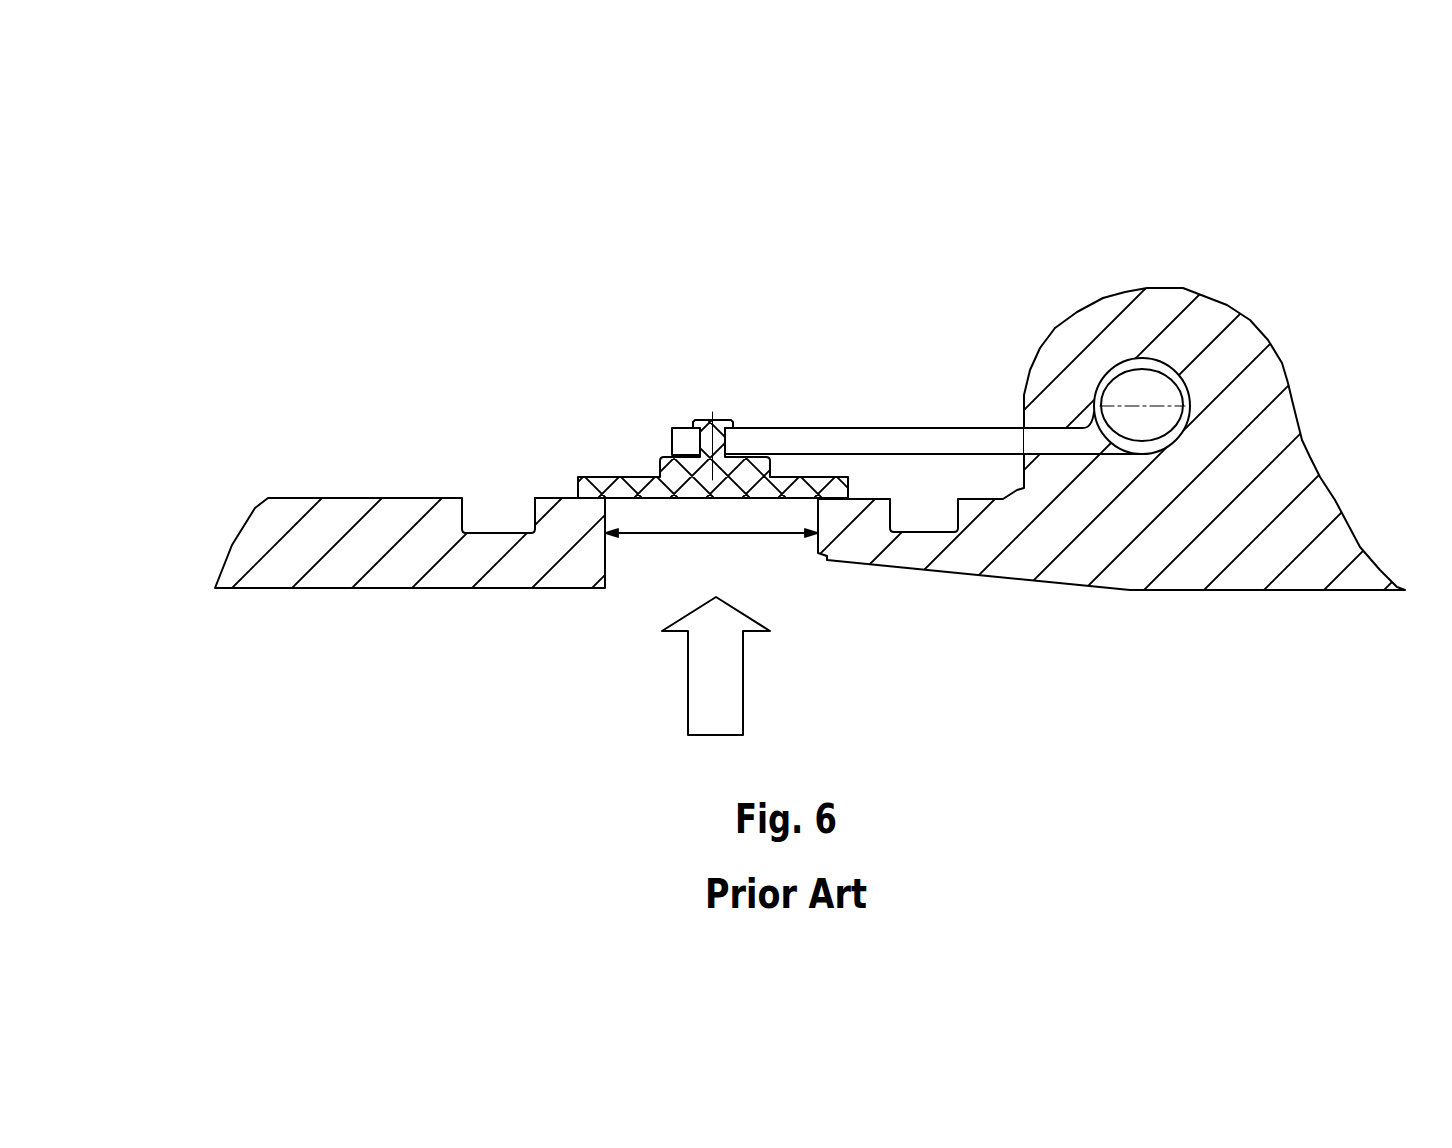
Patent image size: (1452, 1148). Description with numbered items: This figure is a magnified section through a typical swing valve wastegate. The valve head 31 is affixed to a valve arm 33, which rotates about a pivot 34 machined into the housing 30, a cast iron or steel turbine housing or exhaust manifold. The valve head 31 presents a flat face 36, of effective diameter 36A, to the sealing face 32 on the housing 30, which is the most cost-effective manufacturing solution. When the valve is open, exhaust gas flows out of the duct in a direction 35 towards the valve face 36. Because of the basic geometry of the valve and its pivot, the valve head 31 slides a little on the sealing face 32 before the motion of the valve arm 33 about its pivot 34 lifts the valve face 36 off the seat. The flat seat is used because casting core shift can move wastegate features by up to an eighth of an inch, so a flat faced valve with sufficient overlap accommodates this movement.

The housing 30 is at (1130, 290).
The valve head 31 is at (658, 460).
The sealing face 32 is at (592, 505).
The valve arm 33 is at (862, 428).
The pivot 34 is at (1137, 395).
The exhaust gas flow direction 35 is at (722, 639).
The flat face 36 is at (662, 498).
The effective diameter 36A is at (717, 540).